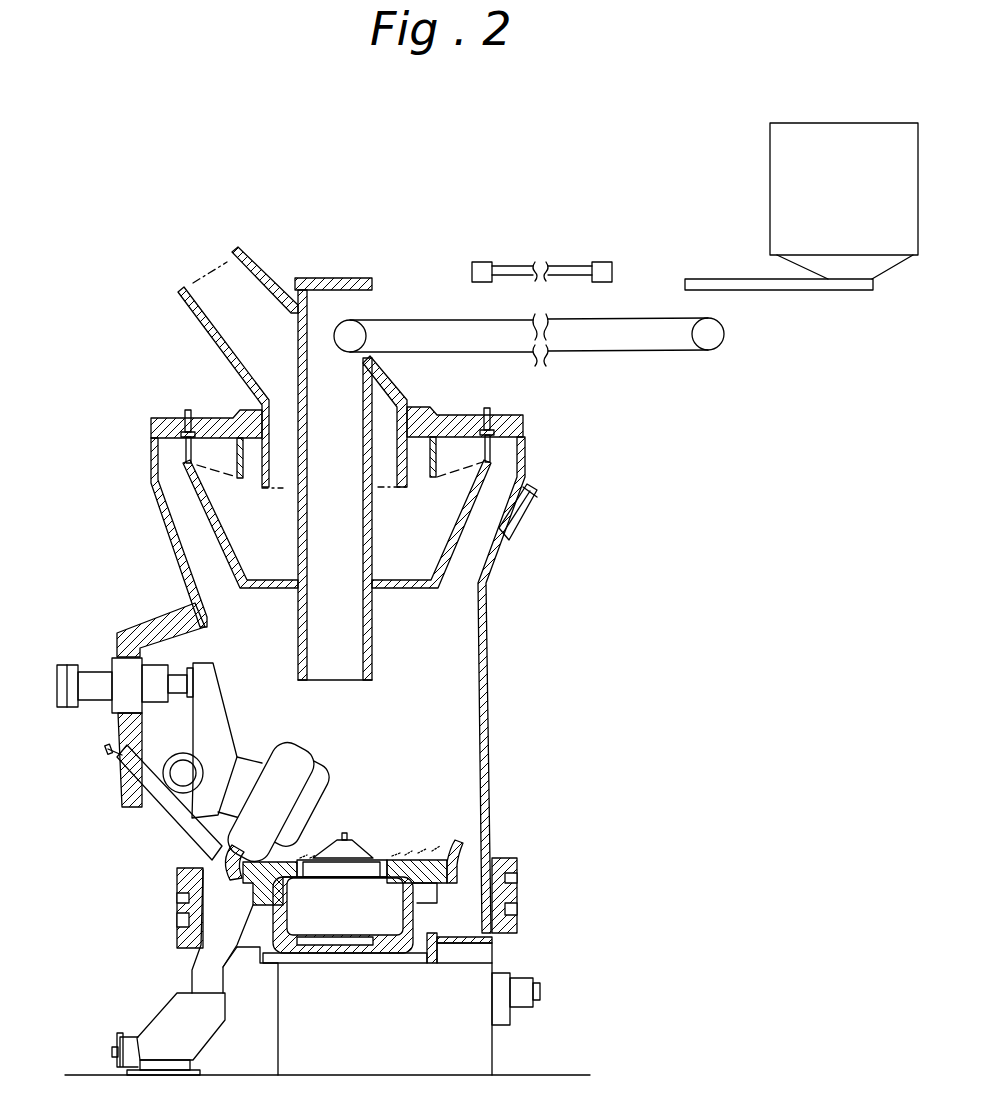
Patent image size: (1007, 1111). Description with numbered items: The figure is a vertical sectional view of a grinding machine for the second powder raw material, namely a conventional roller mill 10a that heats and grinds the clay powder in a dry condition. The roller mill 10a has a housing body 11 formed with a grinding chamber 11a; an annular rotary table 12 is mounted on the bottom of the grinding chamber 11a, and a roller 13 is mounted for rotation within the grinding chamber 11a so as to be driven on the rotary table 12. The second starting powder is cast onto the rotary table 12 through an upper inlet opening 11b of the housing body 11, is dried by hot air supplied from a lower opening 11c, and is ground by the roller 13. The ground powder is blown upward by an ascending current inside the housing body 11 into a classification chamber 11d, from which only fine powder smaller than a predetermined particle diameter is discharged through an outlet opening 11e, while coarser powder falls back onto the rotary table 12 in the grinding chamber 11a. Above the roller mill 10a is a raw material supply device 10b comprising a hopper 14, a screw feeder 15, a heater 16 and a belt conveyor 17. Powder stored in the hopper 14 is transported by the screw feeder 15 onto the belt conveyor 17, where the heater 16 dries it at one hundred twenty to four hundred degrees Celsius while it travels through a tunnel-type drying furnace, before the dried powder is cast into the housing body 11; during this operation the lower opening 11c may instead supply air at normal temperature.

The roller mill 10a is at (498, 689).
The raw material supply device 10b is at (628, 233).
The housing body 11 is at (495, 770).
The grinding chamber 11a is at (442, 723).
The upper inlet opening 11b is at (357, 298).
The lower opening 11c is at (177, 928).
The classification chamber 11d is at (195, 530).
The outlet opening 11e is at (220, 296).
The rotary table 12 is at (468, 843).
The roller 13 is at (300, 768).
The hopper 14 is at (770, 148).
The screw feeder 15 is at (700, 278).
The heater 16 is at (523, 260).
The belt conveyor 17 is at (618, 355).